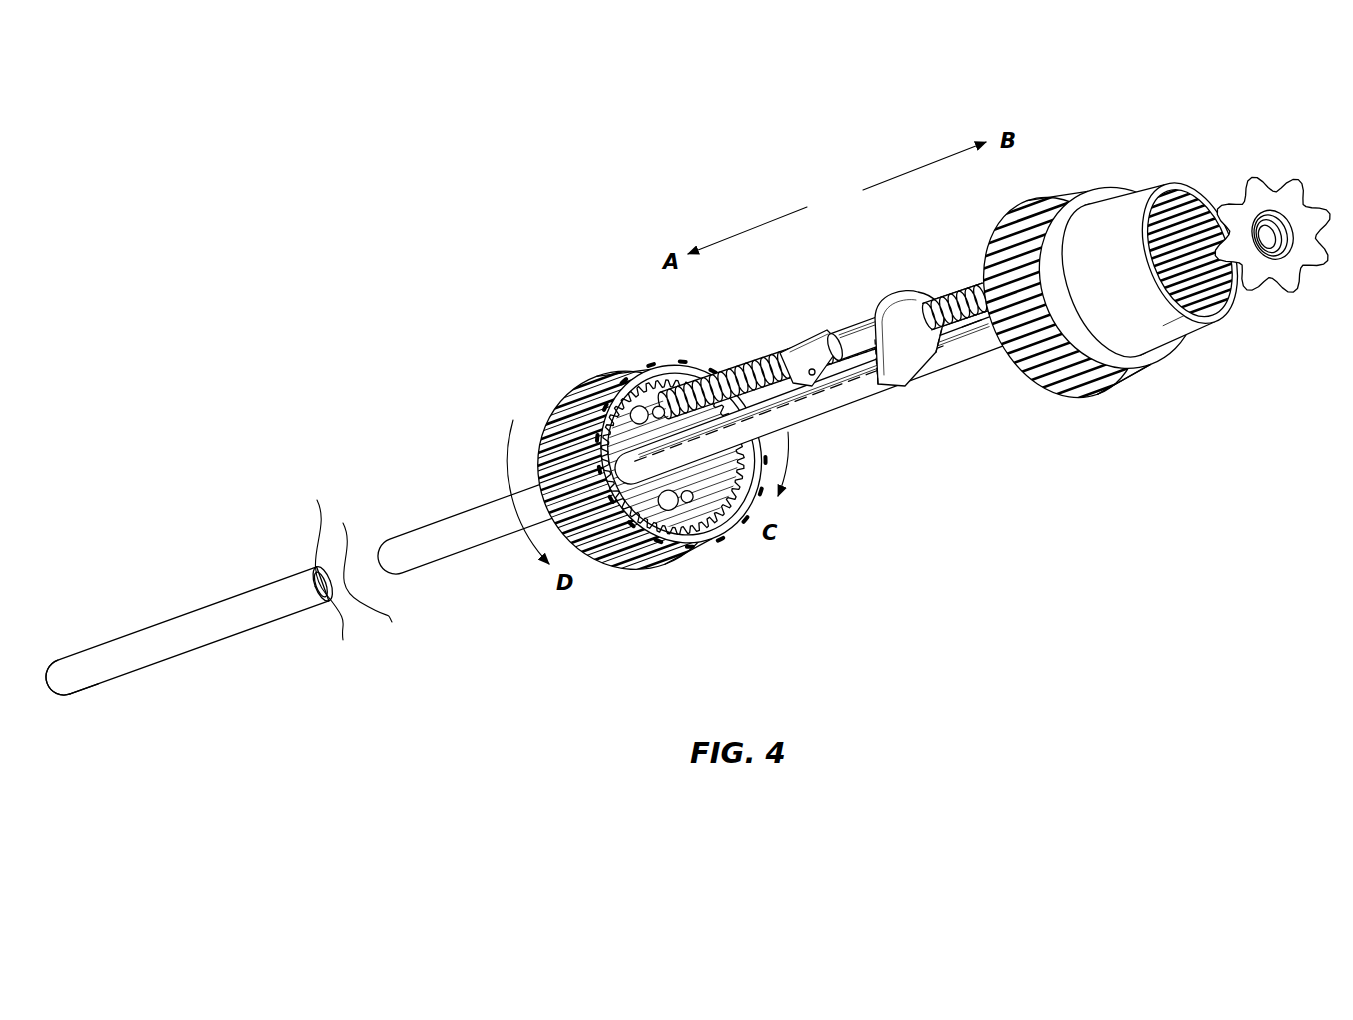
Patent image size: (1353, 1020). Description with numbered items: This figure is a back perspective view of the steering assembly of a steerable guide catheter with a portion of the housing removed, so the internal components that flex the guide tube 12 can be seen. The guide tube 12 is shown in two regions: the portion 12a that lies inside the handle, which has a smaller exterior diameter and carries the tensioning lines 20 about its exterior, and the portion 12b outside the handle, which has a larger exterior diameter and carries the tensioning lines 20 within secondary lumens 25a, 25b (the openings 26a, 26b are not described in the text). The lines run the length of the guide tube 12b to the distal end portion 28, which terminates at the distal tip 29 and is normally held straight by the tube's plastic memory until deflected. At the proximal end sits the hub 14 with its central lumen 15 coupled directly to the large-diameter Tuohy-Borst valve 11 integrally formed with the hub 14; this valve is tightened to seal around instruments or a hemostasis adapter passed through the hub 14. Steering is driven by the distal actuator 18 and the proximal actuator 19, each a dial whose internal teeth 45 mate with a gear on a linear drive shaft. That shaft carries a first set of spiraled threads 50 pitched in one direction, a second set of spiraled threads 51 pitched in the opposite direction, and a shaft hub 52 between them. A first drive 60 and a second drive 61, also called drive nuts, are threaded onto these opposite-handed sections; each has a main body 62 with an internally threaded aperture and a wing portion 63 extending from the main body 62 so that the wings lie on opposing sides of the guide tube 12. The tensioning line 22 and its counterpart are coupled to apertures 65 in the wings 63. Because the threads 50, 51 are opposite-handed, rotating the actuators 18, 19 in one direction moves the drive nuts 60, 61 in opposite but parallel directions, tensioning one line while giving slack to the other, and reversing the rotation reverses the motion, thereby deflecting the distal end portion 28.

The Tuohy-Borst valve 11 is at (1257, 193).
The guide tube 12 is at (214, 664).
The guide tube (inside handle) 12a is at (983, 365).
The guide tube (outside handle) 12b is at (430, 537).
The hub 14 is at (1143, 217).
The central lumen 15 is at (1300, 213).
The distal actuator 18 is at (653, 560).
The proximal actuator 19 is at (1117, 393).
The tensioning lines 20 is at (748, 372).
The tensioning line 22 is at (813, 432).
The secondary lumen 25a is at (318, 566).
The secondary lumen 25b is at (341, 602).
The inner opening 26a is at (330, 560).
The inner opening 26b is at (321, 592).
The distal end portion 28 is at (80, 634).
The distal tip 29 is at (72, 697).
The internal teeth 45 is at (723, 513).
The first set of spiraled threads 50 is at (712, 373).
The second set of spiraled threads 51 is at (973, 292).
The shaft hub 52 is at (853, 337).
The first drive 60 is at (795, 327).
The second drive 61 is at (913, 287).
The main body 62 is at (828, 343).
The wing portion 63 is at (898, 384).
The apertures 65 is at (936, 354).